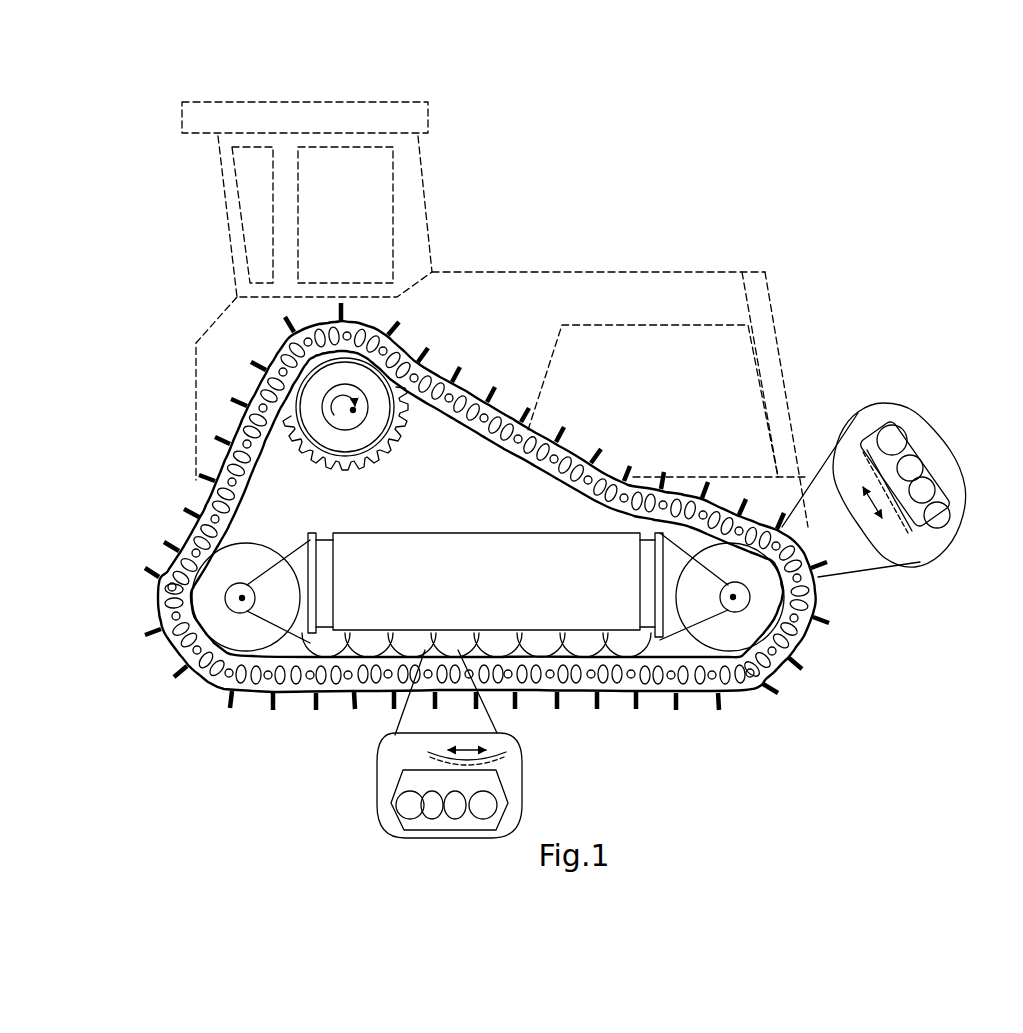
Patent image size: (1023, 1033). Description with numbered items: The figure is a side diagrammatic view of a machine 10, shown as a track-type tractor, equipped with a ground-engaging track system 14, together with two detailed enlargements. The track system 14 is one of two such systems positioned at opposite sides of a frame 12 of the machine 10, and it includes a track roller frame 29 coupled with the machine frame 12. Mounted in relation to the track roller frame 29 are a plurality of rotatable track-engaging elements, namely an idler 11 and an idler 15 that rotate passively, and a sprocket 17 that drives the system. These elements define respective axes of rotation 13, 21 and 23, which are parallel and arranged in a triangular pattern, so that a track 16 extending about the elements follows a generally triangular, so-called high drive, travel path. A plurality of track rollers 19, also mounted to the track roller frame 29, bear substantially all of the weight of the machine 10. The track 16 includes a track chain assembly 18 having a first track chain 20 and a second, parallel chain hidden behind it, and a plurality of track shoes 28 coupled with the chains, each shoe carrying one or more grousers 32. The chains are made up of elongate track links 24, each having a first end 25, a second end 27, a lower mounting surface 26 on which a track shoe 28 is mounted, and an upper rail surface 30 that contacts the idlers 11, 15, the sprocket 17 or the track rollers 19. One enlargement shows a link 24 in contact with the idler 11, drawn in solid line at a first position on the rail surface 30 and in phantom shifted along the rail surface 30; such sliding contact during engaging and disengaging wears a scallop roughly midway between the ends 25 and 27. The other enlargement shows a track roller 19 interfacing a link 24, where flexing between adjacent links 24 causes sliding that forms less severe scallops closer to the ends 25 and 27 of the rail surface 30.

The machine 10 is at (155, 311).
The rotatable track-engaging element (idler) 11 is at (718, 632).
The frame 12 is at (196, 405).
The axis of rotation 13 is at (730, 597).
The ground-engaging track system 14 is at (472, 454).
The rotatable track-engaging element (idler) 15 is at (262, 543).
The track 16 is at (476, 520).
The rotatable track-engaging element (sprocket) 17 is at (397, 465).
The track chain assembly 18 is at (487, 526).
The track rollers 19 is at (378, 645).
The first track chain 20 is at (202, 680).
The axis of rotation 21 is at (246, 598).
The axis of rotation 23 is at (345, 405).
The track link 24 is at (262, 693).
The first end 25 is at (928, 534).
The lower mounting surface 26 is at (426, 832).
The second end 27 is at (508, 803).
The track shoes 28 is at (302, 700).
The track roller frame 29 is at (428, 533).
The upper rail surface 30 is at (421, 769).
The grousers 32 is at (350, 705).